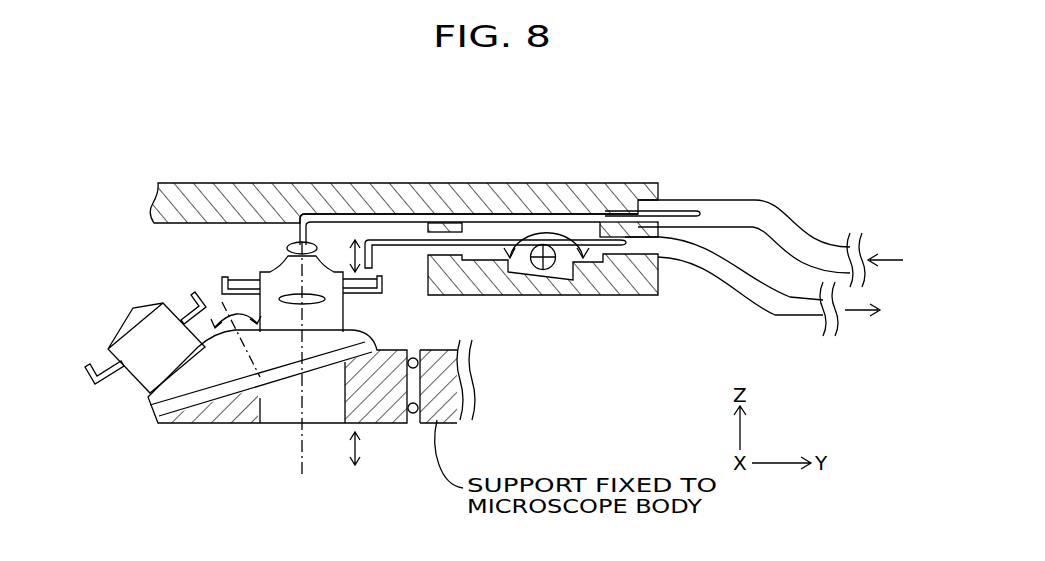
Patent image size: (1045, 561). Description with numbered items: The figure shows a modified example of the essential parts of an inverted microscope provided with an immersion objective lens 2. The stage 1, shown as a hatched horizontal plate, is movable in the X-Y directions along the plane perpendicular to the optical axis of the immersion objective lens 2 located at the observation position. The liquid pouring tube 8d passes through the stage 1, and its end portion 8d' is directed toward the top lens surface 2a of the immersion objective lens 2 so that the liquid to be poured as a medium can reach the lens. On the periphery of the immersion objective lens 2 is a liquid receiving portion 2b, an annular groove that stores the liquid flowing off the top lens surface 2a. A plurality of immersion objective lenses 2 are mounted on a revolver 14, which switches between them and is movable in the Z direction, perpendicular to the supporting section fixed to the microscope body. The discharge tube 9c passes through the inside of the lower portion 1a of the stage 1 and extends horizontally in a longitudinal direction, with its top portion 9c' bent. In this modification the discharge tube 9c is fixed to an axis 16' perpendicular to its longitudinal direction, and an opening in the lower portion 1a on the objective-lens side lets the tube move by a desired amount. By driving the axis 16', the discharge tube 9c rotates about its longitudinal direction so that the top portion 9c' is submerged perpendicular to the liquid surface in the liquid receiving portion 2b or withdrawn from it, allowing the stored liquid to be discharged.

The stage 1 is at (566, 185).
The lower portion of the stage 1a is at (424, 246).
The immersion objective lens 2 is at (272, 268).
The top lens surface 2a is at (287, 248).
The liquid receiving portion 2b is at (84, 369).
The liquid pouring tube 8d is at (770, 228).
The liquid pouring tube (top portion) 8d' is at (489, 186).
The discharge tube 9c is at (752, 293).
The top portion of the discharge tube 9c' is at (407, 287).
The revolver 14 is at (150, 408).
The axis 16' is at (546, 291).